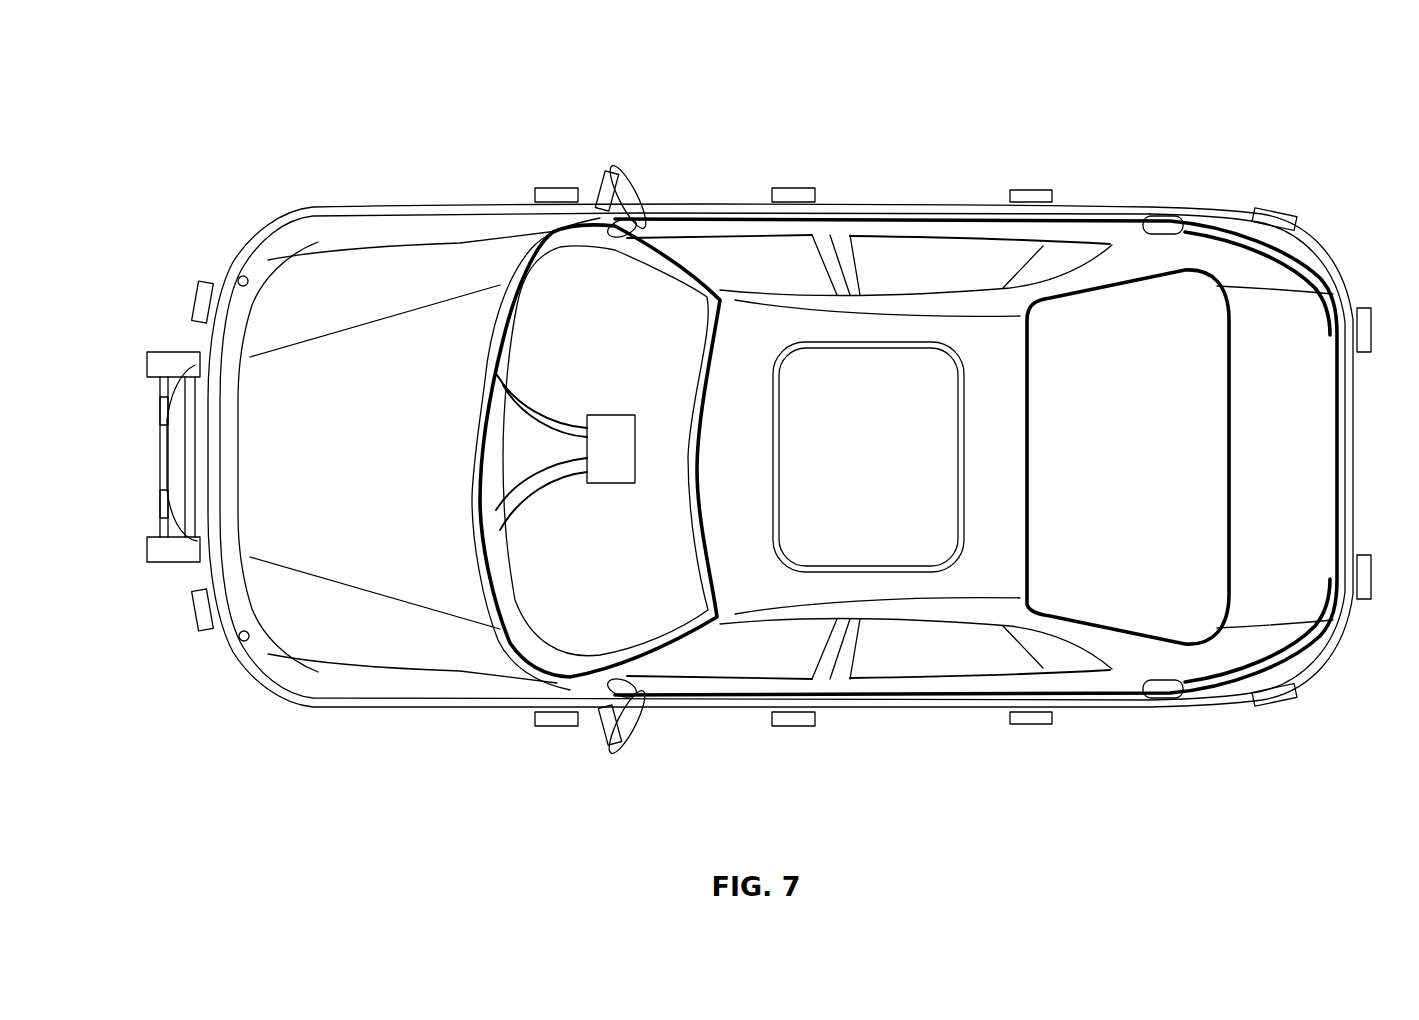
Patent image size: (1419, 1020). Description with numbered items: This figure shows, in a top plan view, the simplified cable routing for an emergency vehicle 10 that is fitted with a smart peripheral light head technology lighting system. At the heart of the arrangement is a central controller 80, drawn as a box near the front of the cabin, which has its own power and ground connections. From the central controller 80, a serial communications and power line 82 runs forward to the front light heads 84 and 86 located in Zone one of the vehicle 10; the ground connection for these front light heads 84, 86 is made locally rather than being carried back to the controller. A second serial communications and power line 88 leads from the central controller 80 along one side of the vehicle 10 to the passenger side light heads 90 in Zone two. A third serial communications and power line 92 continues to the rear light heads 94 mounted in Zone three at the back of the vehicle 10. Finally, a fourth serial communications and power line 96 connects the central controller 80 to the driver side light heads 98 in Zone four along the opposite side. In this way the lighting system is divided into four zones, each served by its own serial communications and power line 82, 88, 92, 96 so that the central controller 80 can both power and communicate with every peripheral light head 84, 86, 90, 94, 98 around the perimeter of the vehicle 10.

The emergency vehicle 10 is at (750, 455).
The central controller 80 is at (625, 435).
The serial communications and power line 82 is at (388, 665).
The front light heads 84 is at (193, 298).
The front light heads 86 is at (238, 280).
The serial communications and power line 88 is at (942, 233).
The passenger side light heads 90 is at (552, 186).
The serial communications and power line 92 is at (1193, 243).
The rear light heads 94 is at (1270, 208).
The serial communications and power line 96 is at (498, 652).
The driver side light heads 98 is at (547, 728).